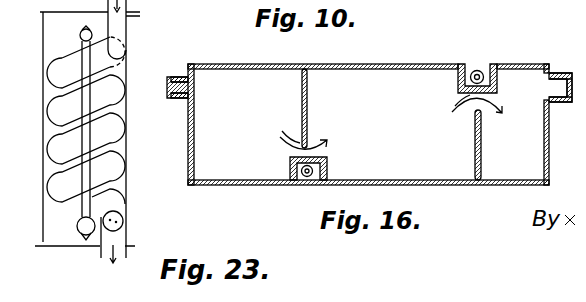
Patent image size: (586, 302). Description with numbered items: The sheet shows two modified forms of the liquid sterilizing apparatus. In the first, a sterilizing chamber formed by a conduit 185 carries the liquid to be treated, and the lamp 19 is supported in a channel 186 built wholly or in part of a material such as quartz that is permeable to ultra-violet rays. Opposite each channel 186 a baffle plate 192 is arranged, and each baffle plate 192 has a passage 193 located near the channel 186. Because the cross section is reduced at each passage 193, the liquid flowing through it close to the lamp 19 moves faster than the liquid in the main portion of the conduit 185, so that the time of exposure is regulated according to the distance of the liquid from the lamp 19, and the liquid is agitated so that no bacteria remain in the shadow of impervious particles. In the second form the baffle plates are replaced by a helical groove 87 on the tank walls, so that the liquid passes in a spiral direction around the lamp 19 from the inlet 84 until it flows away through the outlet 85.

In FIG. 23, the lamp 19 is at (77, 226).
In FIG. 16, the lamp 19 is at (480, 70).
In FIG. 23, the inlet 84 is at (126, 32).
In FIG. 23, the outlet 85 is at (121, 226).
In FIG. 23, the helical groove 87 is at (125, 110).
In FIG. 16, the conduit 185 is at (393, 180).
In FIG. 16, the channel 186 is at (497, 68).
In FIG. 16, the baffle plate 192 is at (302, 90).
In FIG. 16, the passage 193 is at (308, 143).